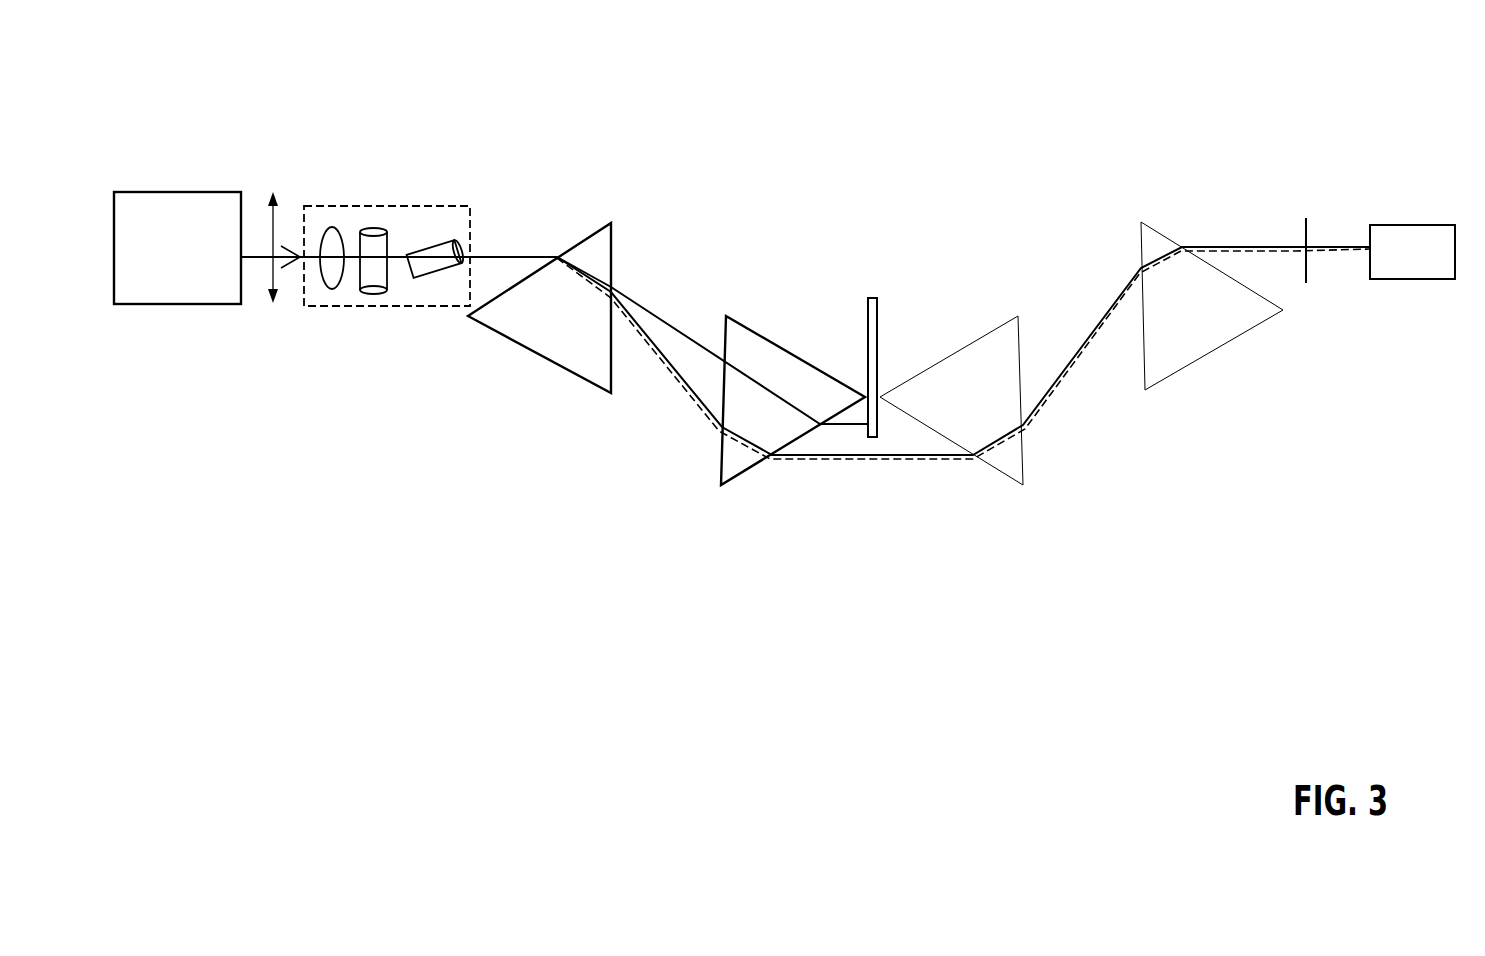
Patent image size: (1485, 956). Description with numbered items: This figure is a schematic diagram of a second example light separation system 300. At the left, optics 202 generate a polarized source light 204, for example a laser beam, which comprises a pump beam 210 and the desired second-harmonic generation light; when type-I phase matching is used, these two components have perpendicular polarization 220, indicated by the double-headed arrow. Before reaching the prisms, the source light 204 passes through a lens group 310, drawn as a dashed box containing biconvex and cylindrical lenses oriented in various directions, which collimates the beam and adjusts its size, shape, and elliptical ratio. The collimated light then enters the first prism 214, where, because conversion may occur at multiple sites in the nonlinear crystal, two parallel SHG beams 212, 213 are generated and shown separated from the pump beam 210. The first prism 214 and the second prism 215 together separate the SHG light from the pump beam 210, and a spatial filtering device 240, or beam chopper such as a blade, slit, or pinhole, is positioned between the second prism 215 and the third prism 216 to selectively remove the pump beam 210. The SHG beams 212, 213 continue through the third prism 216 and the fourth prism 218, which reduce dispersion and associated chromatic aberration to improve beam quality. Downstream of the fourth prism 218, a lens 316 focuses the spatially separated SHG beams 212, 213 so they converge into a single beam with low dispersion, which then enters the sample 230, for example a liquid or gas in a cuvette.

The second example light separation system 300 is at (1343, 84).
The optics 202 is at (162, 260).
The perpendicular polarization 220 is at (273, 216).
The source light 204 is at (505, 254).
The lens group 310 is at (408, 205).
The first prism 214 is at (592, 365).
The pump beam 210 is at (673, 327).
The SHG beam 213 is at (735, 429).
The SHG beam 212 is at (675, 372).
The second prism 215 is at (749, 467).
The spatial filtering device 240 is at (874, 324).
The third prism 216 is at (1002, 462).
The fourth prism 218 is at (1208, 353).
The lens 316 is at (1308, 235).
The sample 230 is at (1397, 262).